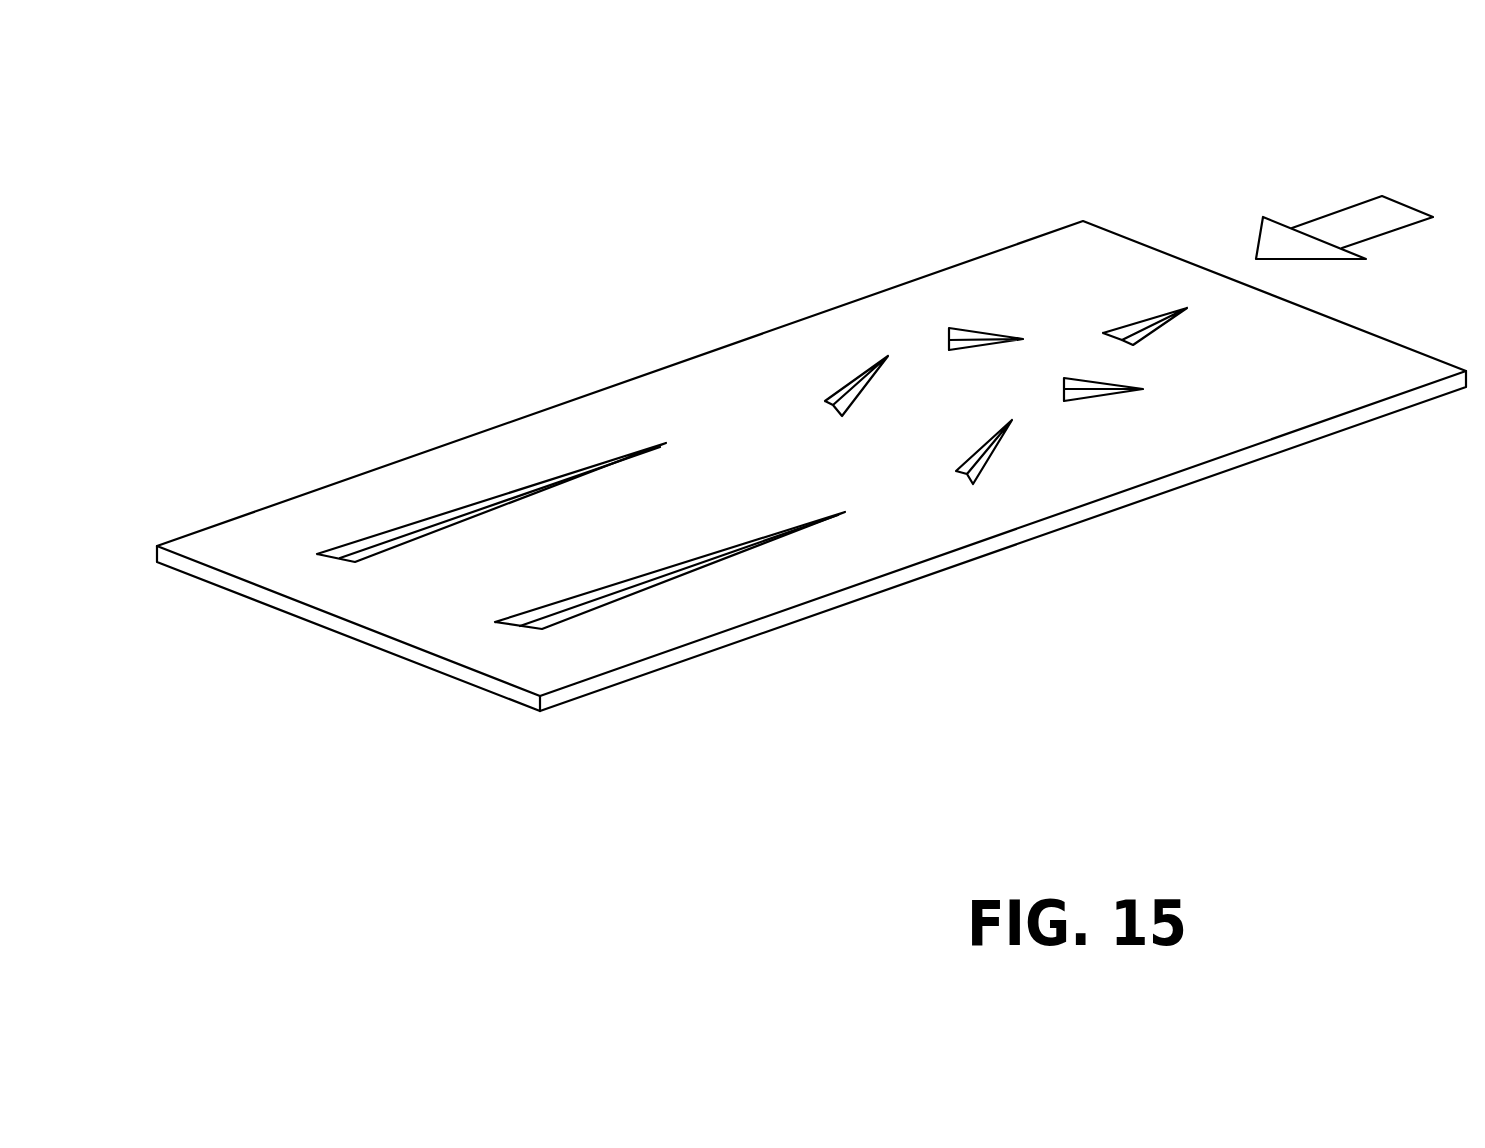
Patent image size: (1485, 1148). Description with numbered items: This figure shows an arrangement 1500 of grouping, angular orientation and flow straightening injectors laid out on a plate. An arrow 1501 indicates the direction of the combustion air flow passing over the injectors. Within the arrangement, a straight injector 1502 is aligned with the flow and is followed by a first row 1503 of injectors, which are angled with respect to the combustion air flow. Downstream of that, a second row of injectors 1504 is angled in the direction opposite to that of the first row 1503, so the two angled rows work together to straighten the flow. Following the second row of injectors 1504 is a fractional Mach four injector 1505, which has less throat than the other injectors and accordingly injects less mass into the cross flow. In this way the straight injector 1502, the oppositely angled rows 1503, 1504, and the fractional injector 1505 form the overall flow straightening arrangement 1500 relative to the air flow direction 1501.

The grouping, angular orientation and flow straightening injectors 1500 is at (535, 347).
The arrow 1501 is at (1373, 214).
The straight injector 1502 is at (1157, 327).
The first row of injectors 1503 is at (1103, 395).
The second row of injectors 1504 is at (992, 453).
The fractional Mach 4 injector 1505 is at (355, 538).